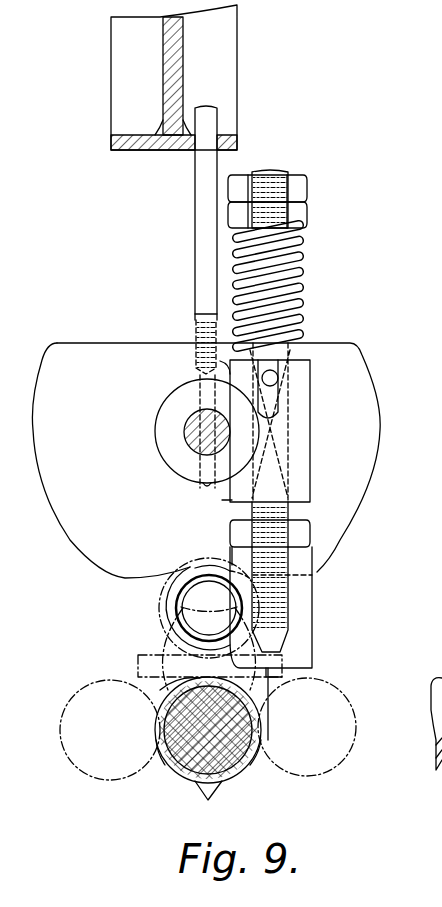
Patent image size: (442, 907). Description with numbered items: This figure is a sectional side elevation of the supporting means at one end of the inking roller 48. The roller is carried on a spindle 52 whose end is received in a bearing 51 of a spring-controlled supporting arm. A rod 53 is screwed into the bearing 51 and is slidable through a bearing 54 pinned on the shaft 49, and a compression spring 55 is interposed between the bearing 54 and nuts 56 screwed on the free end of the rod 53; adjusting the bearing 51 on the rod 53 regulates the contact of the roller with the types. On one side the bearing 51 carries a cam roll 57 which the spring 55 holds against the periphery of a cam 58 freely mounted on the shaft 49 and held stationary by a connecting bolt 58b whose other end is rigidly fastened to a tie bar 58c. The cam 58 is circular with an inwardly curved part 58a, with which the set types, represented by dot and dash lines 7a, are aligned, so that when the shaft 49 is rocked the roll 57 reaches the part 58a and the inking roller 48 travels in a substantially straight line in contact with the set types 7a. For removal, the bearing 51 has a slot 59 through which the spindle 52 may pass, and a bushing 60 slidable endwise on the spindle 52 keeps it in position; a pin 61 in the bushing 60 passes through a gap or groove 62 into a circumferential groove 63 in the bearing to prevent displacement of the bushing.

The tie bar 58c is at (227, 43).
The connecting bolt 58b is at (201, 217).
The nuts 56 is at (301, 212).
The compression spring 55 is at (297, 273).
The cam 58 is at (92, 547).
The shaft 49 is at (197, 428).
The bearing 54 is at (303, 432).
The rod 53 is at (285, 508).
The inwardly curved part 58a is at (192, 566).
The cam roll 57 is at (178, 588).
The bearing 51 is at (262, 687).
The set or selected types 7a is at (156, 665).
The spindle 52 is at (161, 712).
The gap or groove 62 is at (149, 683).
The circumferential groove 63 is at (160, 742).
The bushing 60 is at (270, 702).
The pin 61 is at (261, 740).
The slot 59 is at (209, 804).
The inking roller 48 is at (127, 770).